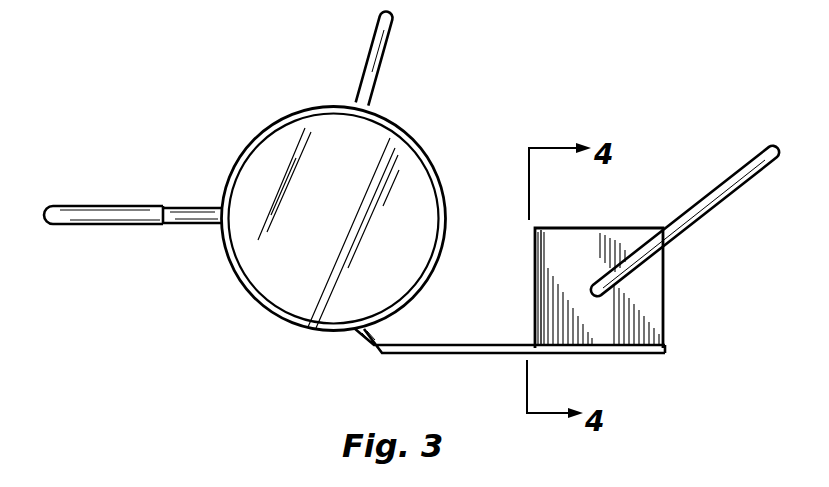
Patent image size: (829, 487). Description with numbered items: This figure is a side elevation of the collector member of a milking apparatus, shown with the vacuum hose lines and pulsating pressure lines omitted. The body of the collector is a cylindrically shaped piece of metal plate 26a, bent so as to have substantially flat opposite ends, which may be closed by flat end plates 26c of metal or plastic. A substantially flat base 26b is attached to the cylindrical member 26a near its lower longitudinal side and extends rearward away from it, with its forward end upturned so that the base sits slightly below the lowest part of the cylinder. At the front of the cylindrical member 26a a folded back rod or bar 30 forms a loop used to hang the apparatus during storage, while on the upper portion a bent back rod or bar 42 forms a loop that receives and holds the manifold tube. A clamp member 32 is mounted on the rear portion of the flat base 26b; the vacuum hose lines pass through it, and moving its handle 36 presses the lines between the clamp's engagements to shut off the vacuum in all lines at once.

The metal plate 26a is at (442, 177).
The flat base 26b is at (445, 353).
The end plates 26c is at (392, 163).
The folded back rod or bar 30 is at (147, 207).
The clamp member 32 is at (581, 261).
The handle 36 is at (693, 222).
The bent back rod or bar 42 is at (358, 84).